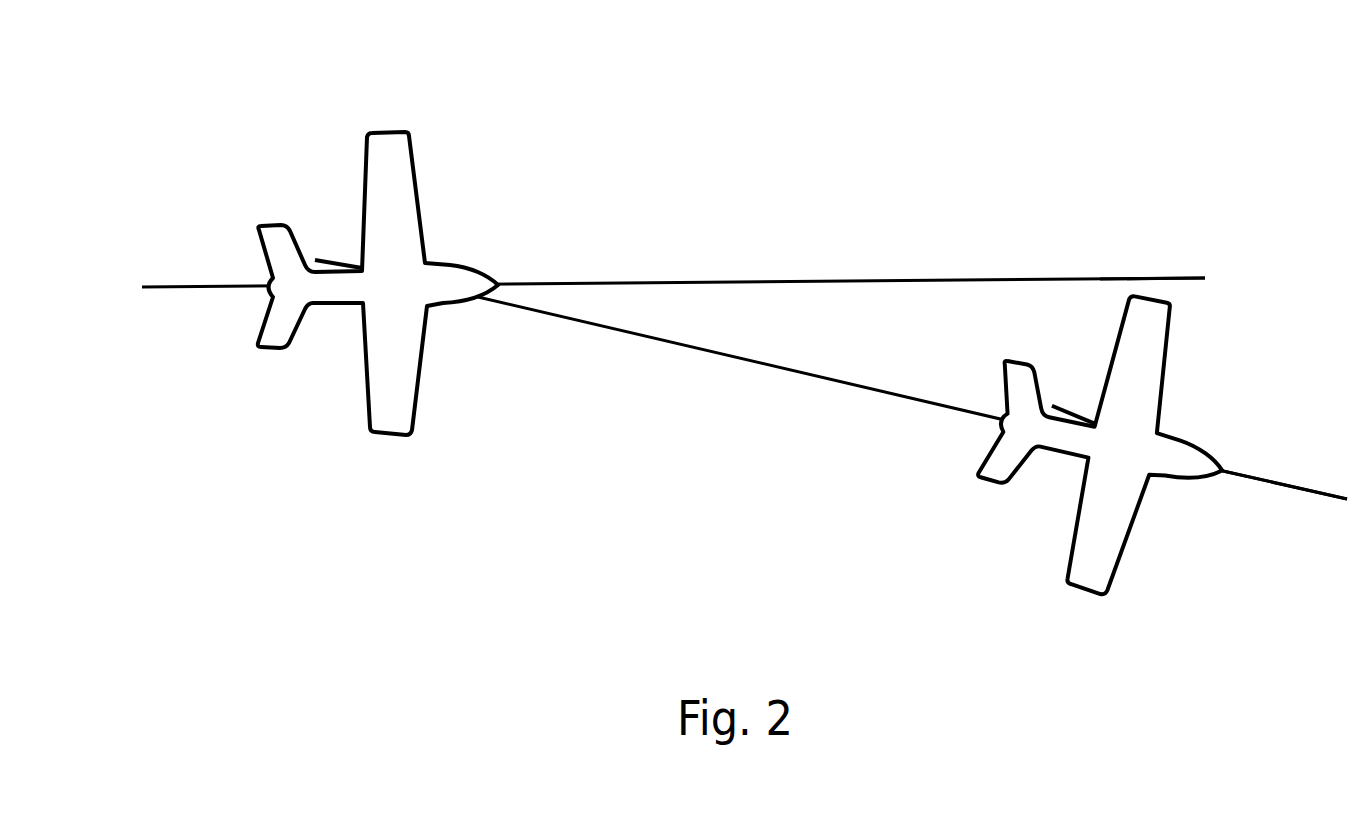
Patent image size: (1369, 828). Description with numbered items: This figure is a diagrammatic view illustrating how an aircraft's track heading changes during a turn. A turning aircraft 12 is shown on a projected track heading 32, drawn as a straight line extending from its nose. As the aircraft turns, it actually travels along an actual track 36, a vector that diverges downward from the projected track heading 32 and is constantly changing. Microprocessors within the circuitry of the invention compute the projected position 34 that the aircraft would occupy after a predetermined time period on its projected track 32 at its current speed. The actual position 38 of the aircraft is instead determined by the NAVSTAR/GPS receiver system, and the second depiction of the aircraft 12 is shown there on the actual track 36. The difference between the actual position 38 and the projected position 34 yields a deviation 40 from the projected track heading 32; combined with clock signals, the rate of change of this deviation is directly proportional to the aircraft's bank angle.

The turning aircraft 12 is at (391, 130).
The projected track heading 32 is at (845, 281).
The projected position 34 is at (1127, 302).
The actual track 36 is at (784, 369).
The actual position 38 is at (1150, 475).
The deviation 40 is at (1127, 292).